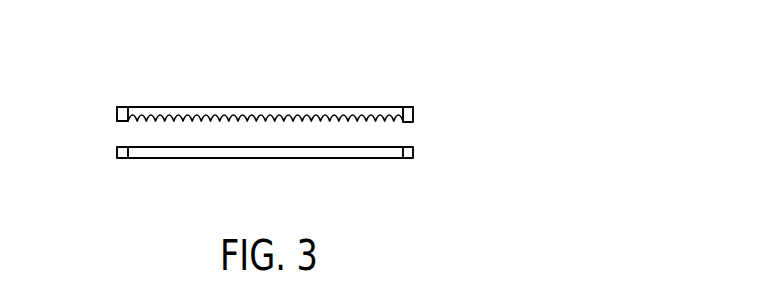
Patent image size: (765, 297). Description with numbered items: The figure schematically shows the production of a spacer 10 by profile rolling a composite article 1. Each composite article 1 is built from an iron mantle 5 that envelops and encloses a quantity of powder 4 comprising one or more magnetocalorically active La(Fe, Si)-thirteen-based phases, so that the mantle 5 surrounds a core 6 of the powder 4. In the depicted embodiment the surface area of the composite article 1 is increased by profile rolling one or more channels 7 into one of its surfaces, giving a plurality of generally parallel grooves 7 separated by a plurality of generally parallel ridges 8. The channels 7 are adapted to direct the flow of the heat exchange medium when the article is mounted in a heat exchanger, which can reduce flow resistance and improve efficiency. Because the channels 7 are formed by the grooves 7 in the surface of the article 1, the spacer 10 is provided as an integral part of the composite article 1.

The composite article 1 is at (273, 132).
The powder 4 is at (140, 117).
The iron mantle 5 is at (317, 111).
The core 6 is at (413, 112).
The channels 7 is at (388, 120).
The ridges 8 is at (138, 118).
The spacer 10 is at (237, 107).